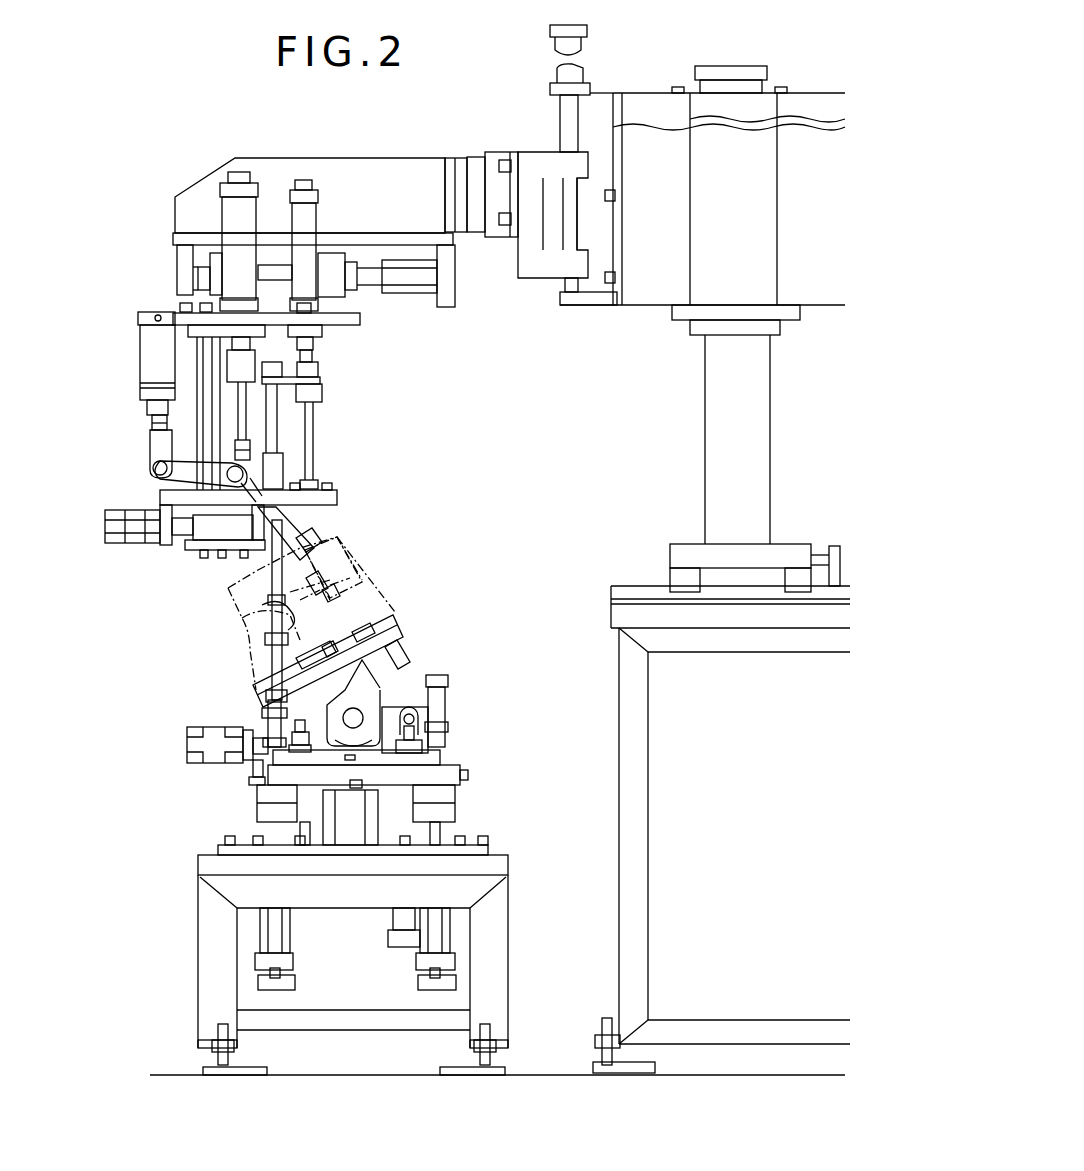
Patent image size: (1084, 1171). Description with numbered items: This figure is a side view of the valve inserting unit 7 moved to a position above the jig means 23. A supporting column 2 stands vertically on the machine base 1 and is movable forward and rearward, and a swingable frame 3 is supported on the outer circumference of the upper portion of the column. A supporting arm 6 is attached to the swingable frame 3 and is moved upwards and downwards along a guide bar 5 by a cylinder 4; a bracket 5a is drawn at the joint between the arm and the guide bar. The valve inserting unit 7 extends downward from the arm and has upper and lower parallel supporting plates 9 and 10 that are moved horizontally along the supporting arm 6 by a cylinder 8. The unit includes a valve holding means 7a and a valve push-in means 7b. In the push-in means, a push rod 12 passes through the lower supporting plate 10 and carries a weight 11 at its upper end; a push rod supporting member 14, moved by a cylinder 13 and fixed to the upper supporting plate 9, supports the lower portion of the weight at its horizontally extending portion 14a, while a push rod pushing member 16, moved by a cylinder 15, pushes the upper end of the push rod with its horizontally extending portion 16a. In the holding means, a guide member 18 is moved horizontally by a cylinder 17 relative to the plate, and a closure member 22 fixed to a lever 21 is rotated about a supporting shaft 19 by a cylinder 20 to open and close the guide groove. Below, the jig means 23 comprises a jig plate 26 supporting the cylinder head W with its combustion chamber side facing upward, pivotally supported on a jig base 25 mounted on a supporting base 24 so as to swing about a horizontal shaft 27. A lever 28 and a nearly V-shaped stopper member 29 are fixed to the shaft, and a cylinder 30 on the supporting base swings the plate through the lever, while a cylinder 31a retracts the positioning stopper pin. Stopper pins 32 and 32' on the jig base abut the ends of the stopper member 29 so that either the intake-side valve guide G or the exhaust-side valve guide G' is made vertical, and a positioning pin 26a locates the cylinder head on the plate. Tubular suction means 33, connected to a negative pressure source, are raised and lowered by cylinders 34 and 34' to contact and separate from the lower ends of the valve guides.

The machine base 1 is at (636, 733).
The supporting column 2 is at (707, 427).
The swingable frame 3 is at (618, 308).
The cylinder 4 is at (572, 50).
The guide bar 5 is at (560, 285).
The bracket 5a is at (530, 262).
The supporting arm 6 is at (393, 175).
The valve inserting unit 7 is at (366, 461).
The valve holding means 7a is at (200, 564).
The valve push-in means 7b is at (378, 383).
The cylinder 8 is at (414, 293).
The upper supporting plate 9 is at (350, 322).
The lower supporting plate 10 is at (338, 499).
The weight 11 is at (283, 370).
The push rod 12 is at (278, 446).
The cylinder 13 is at (318, 225).
The push rod supporting member 14 is at (314, 408).
The horizontally extending portion 14a is at (320, 392).
The cylinder 15 is at (224, 218).
The push rod pushing member 16 is at (230, 374).
The horizontally extending portion 16a is at (252, 349).
The cylinder 17 is at (132, 510).
The guide member 18 is at (244, 544).
The supporting shaft 19 is at (165, 462).
The cylinder 20 is at (148, 356).
The lever 21 is at (288, 518).
The closure member 22 is at (318, 566).
The jig means 23 is at (456, 662).
The supporting base 24 is at (213, 940).
The jig base 25 is at (452, 785).
The jig plate 26 is at (392, 650).
The positioning pin 26a is at (270, 660).
The horizontal shaft 27 is at (360, 716).
The lever 28 is at (426, 711).
The stopper member 29 is at (376, 692).
The cylinder 30 is at (395, 946).
The cylinder 31a is at (188, 745).
The stopper pin 32 is at (253, 765).
The stopper pin 32' is at (448, 728).
The tubular suction means 33 is at (448, 688).
The cylinder 34 is at (294, 956).
The cylinder 34' is at (414, 956).
The valve guide G is at (292, 613).
The valve guide G' is at (355, 567).
The cylinder head W is at (345, 625).